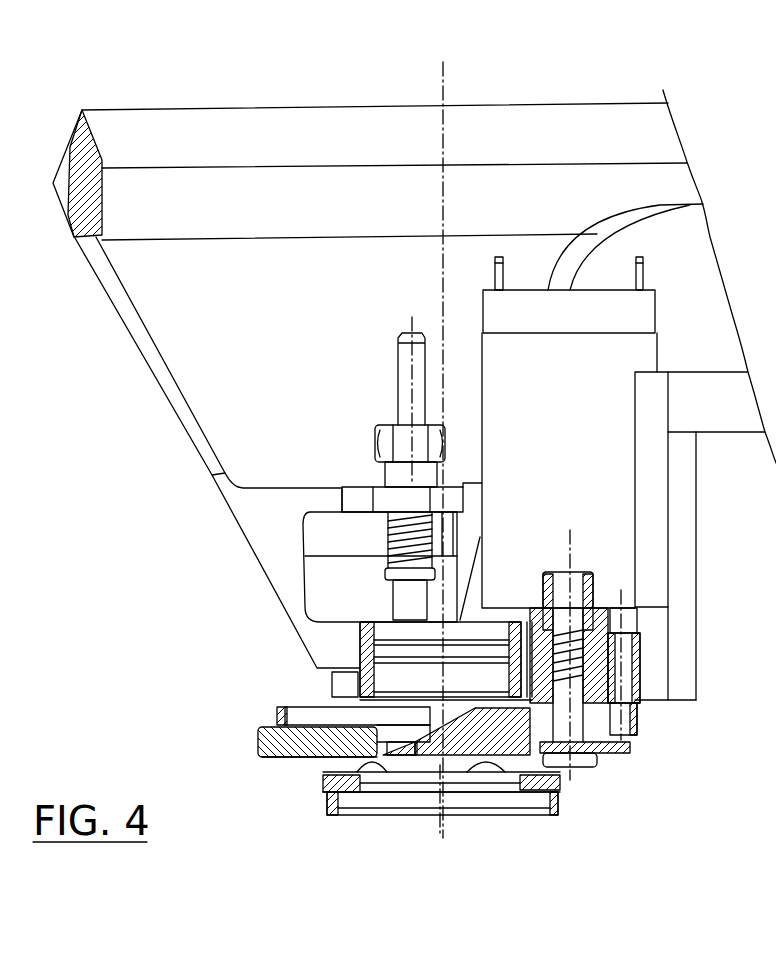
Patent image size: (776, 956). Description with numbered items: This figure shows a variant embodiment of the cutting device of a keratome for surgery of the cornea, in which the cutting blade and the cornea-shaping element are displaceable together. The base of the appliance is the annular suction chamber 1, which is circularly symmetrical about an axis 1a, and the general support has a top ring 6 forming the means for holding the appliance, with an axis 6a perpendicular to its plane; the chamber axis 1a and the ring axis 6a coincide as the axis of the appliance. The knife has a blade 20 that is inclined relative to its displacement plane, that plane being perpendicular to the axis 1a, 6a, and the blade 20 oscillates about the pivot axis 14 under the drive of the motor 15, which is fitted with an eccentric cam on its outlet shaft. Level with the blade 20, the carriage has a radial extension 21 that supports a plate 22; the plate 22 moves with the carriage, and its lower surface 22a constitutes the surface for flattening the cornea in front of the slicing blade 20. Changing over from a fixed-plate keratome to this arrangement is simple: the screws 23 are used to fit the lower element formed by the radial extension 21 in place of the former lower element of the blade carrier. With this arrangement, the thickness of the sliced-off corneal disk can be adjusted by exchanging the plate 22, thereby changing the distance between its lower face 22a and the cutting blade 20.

The annular chamber 1 is at (558, 797).
The axis 1a is at (440, 797).
The top ring 6 is at (95, 153).
The axis 6a is at (445, 132).
The pivot axis 14 is at (571, 588).
The motor 15 is at (584, 380).
The blade 20 is at (382, 757).
The radial extension 21 is at (473, 733).
The plate 22 is at (270, 737).
The lower surface 22a is at (285, 762).
The screws 23 is at (640, 678).